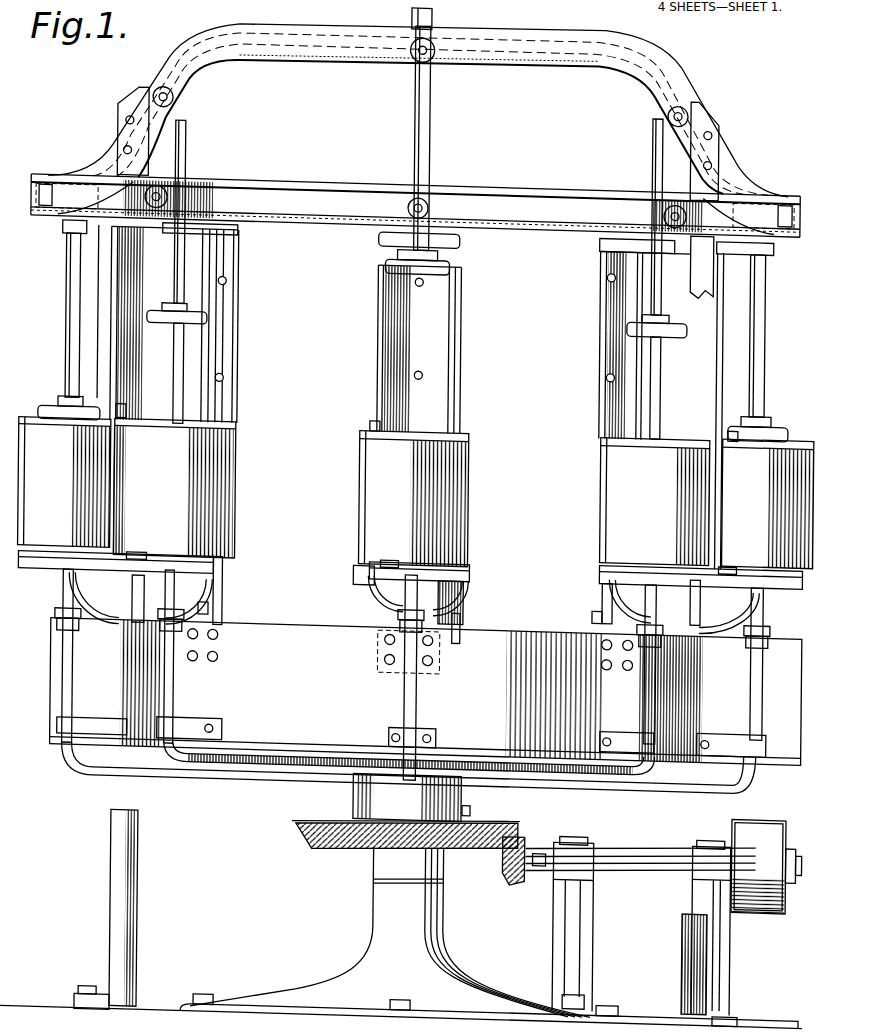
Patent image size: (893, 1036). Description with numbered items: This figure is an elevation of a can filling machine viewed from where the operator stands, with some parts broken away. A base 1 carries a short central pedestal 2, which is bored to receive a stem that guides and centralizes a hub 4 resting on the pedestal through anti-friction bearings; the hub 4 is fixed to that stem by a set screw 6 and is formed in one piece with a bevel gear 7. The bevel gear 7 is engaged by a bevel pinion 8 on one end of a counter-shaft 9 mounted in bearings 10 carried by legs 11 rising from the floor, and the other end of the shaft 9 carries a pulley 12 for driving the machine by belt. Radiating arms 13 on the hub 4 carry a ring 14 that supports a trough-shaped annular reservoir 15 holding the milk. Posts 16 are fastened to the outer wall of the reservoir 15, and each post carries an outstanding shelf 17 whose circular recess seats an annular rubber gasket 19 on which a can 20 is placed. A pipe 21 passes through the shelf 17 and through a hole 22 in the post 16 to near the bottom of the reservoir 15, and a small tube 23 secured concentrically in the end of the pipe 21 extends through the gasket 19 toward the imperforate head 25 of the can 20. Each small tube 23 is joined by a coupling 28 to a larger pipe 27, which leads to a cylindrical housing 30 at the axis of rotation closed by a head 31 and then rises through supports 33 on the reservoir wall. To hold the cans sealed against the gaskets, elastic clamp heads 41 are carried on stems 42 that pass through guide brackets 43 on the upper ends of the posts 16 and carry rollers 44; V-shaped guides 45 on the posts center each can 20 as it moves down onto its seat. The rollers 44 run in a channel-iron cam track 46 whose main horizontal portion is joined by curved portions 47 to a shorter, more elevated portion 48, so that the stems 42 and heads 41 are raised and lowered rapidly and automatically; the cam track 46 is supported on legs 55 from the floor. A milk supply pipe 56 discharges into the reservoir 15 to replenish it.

The base 1 is at (272, 994).
The pedestal 2 is at (384, 918).
The hub 4 is at (407, 797).
The set screw 6 is at (478, 796).
The bevel gear 7 is at (320, 836).
The bevel pinion 8 is at (514, 866).
The counter-shaft 9 is at (640, 877).
The bearings 10 is at (574, 834).
The legs 11 is at (722, 940).
The pulley 12 is at (770, 894).
The radiating arms 13 is at (333, 758).
The ring 14 is at (281, 774).
The annular reservoir 15 is at (426, 692).
The posts 16 is at (138, 587).
The shelf 17 is at (60, 567).
The gasket 19 is at (142, 557).
The can 20 is at (415, 496).
The pipe 21 is at (114, 614).
The hole 22 is at (212, 608).
The small tube 23 is at (60, 596).
The head 25 is at (120, 406).
The pipe 27 is at (80, 692).
The coupling 28 is at (62, 628).
The housing 30 is at (465, 622).
The head 31 is at (359, 563).
The supports 33 is at (130, 722).
The clamp heads 41 is at (452, 261).
The stem 42 is at (431, 153).
The guide bracket 43 is at (66, 232).
The roller 44 is at (168, 82).
The V-shape guide 45 is at (114, 331).
The cam track 46 is at (300, 178).
The curved portions 47 is at (103, 154).
The elevated portion 48 is at (326, 45).
The legs 55 is at (131, 114).
The milk supply pipe 56 is at (433, 6).